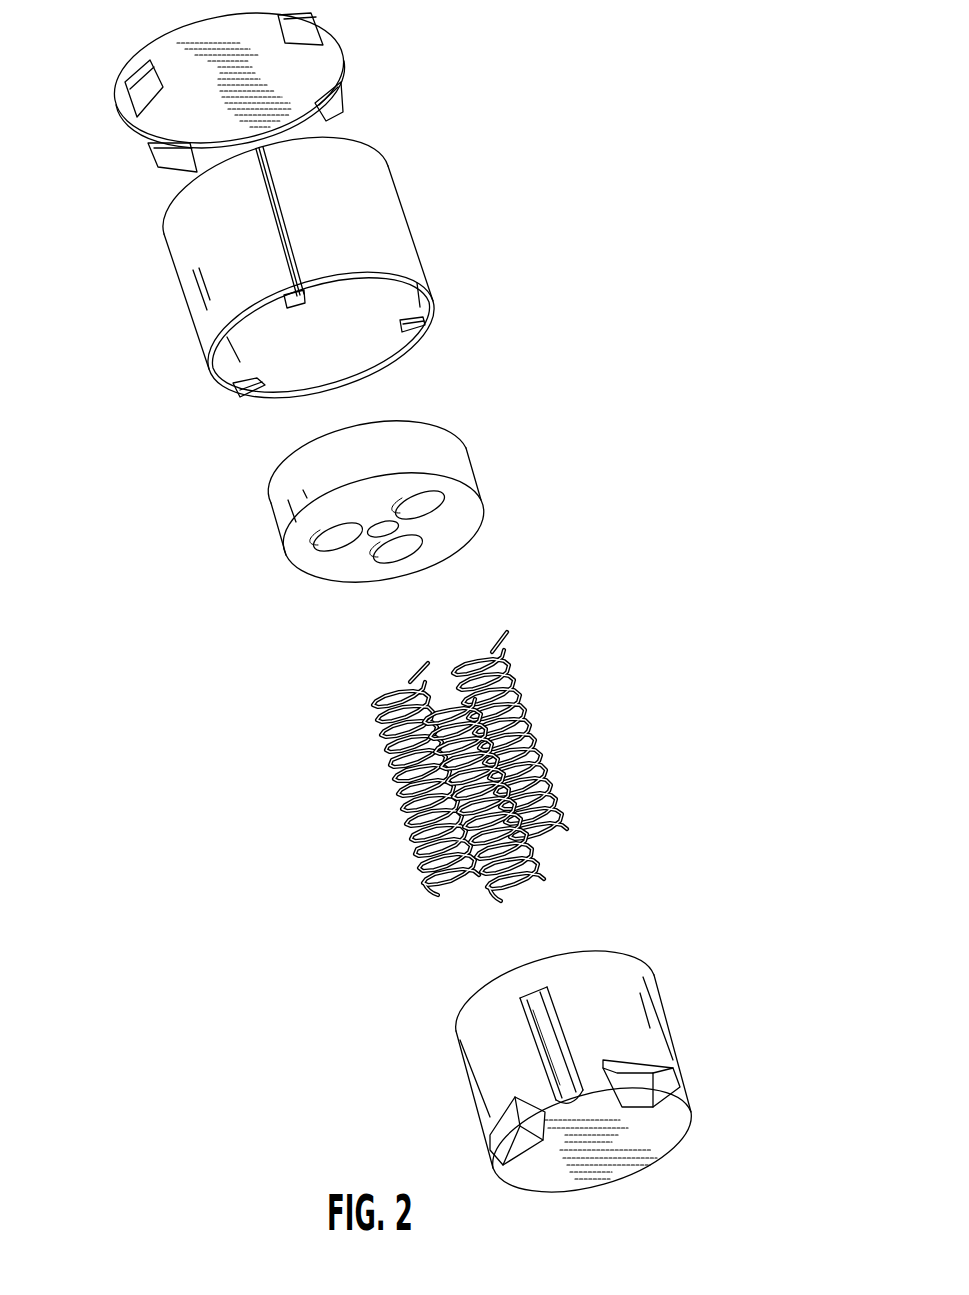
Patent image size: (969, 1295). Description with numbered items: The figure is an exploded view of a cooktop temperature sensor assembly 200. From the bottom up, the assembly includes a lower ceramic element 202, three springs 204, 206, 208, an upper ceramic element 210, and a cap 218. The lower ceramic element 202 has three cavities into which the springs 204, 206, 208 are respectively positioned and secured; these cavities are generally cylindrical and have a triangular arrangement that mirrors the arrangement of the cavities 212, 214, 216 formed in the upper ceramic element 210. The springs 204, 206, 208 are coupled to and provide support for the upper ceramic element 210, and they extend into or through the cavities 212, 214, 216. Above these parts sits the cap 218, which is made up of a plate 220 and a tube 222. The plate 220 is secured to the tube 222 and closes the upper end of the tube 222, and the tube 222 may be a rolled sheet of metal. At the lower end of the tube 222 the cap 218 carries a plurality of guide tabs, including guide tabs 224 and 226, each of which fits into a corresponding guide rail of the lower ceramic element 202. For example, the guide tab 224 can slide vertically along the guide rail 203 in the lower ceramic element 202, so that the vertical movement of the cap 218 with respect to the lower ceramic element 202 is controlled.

The cooktop temperature sensor assembly 200 is at (740, 138).
The lower ceramic element 202 is at (539, 1083).
The guide rail 203 is at (583, 1088).
The spring 204 is at (378, 753).
The spring 206 is at (500, 900).
The spring 208 is at (503, 668).
The upper ceramic element 210 is at (356, 542).
The cavity 212 is at (337, 540).
The cavity 214 is at (405, 548).
The cavity 216 is at (450, 500).
The cap 218 is at (120, 147).
The plate 220 is at (344, 54).
The tube 222 is at (324, 281).
The guide tab 224 is at (240, 387).
The guide tab 226 is at (423, 330).